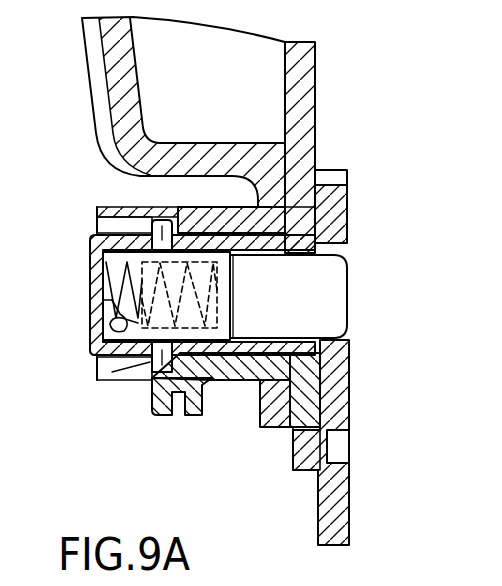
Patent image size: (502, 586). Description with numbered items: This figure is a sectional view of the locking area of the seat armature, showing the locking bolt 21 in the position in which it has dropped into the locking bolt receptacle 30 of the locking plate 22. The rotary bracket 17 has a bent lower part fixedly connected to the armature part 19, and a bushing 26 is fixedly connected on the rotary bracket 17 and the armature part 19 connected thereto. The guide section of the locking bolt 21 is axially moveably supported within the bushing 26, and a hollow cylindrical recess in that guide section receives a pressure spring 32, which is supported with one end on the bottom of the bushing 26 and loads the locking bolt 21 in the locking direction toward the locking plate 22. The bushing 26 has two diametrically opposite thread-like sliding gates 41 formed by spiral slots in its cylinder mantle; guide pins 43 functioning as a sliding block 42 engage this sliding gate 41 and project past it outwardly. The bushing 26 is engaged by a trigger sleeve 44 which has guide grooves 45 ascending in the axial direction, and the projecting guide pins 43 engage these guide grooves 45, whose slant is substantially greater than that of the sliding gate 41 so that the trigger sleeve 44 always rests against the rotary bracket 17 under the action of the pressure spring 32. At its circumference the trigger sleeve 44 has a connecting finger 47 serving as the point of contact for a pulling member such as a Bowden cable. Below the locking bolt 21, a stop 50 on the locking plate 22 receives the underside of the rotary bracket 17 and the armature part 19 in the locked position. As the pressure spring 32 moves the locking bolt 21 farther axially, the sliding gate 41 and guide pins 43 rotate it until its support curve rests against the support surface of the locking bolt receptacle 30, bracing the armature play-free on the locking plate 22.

The rotary bracket 17 is at (115, 50).
The armature part 19 is at (300, 93).
The locking bolt 21 is at (366, 289).
The locking plate 22 is at (340, 505).
The bushing 26 is at (226, 238).
The locking bolt receptacle 30 is at (340, 232).
The pressure spring 32 is at (130, 292).
The sliding gate 41 is at (177, 220).
The sliding block 42 is at (103, 207).
The guide pins 43 is at (147, 205).
The trigger sleeve 44 is at (237, 383).
The guide grooves 45 is at (106, 224).
The connecting finger 47 is at (195, 400).
The stop 50 is at (292, 470).